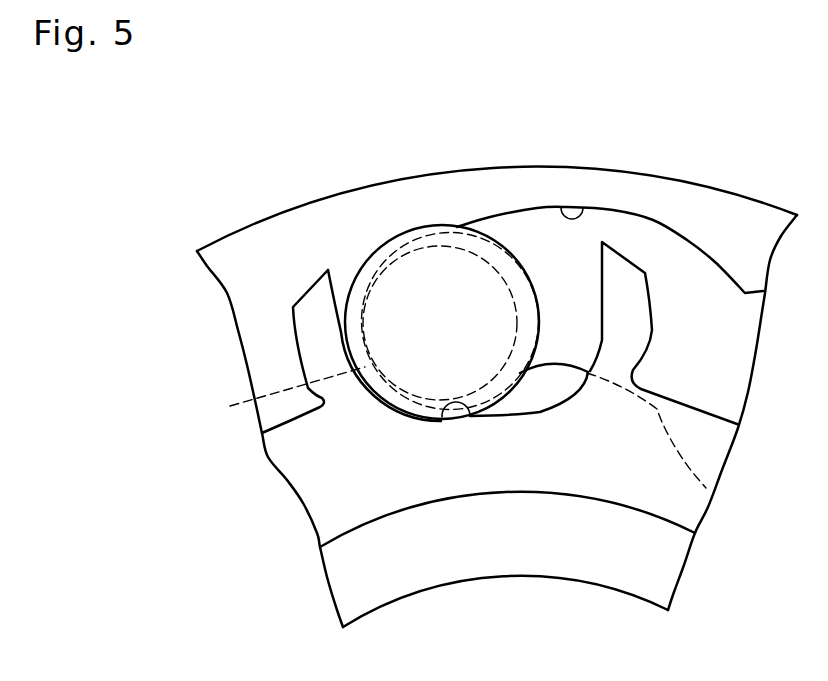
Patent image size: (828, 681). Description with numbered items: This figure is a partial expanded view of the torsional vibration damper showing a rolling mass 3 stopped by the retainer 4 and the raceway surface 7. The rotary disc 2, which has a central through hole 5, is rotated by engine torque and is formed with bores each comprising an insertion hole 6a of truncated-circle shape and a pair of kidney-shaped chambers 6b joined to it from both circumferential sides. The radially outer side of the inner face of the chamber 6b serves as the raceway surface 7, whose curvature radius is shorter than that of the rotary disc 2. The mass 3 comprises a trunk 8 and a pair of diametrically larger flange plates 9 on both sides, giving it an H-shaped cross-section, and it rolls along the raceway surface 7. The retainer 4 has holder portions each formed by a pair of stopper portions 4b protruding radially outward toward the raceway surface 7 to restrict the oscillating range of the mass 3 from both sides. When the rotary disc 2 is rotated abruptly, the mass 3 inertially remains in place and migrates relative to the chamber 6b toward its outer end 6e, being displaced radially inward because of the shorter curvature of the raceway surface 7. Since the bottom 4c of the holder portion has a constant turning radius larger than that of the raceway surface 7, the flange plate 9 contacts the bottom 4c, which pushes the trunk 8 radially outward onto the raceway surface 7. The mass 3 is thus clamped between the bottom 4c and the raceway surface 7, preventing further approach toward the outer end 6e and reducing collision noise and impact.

The rotary disc 2 is at (590, 563).
The rolling mass 3 is at (405, 220).
The retainer 4 is at (340, 508).
The stopper portion 4b is at (315, 280).
The bottom of the holder portion 4c is at (473, 420).
The through hole 5 is at (485, 580).
The insertion hole 6a is at (697, 462).
The chamber 6b is at (702, 275).
The outer end of the chamber 6e is at (282, 393).
The raceway surface 7 is at (582, 217).
The trunk 8 is at (473, 267).
The flange plate 9 is at (430, 223).